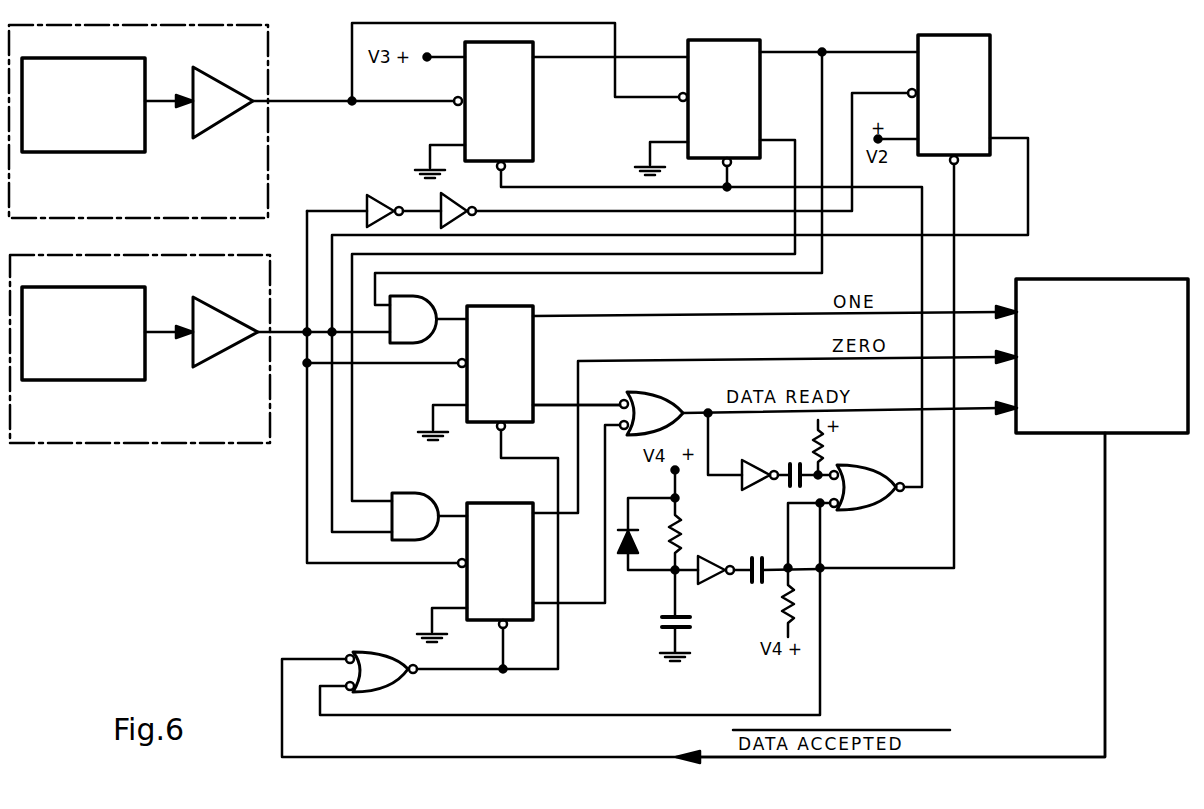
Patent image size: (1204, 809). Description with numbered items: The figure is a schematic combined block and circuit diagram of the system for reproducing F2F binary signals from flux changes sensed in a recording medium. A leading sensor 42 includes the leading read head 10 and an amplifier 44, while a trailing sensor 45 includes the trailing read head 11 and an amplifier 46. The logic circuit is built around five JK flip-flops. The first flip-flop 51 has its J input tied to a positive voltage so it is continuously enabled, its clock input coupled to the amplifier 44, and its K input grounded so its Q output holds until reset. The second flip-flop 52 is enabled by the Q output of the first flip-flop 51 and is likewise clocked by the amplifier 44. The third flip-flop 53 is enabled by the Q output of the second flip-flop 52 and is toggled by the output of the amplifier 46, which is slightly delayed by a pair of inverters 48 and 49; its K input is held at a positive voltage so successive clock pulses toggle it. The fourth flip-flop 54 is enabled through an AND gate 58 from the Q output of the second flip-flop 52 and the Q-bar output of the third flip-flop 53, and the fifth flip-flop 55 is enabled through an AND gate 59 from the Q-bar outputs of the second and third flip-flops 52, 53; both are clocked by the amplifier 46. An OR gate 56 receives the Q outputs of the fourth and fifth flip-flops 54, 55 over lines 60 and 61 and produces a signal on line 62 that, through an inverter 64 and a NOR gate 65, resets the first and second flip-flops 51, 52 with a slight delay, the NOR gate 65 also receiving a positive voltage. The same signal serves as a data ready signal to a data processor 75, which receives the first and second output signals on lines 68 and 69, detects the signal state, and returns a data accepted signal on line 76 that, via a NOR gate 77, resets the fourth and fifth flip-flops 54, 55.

The leading read head 10 is at (100, 152).
The trailing read head 11 is at (100, 380).
The leading sensor 42 is at (268, 148).
The amplifier 44 is at (210, 128).
The trailing sensor 45 is at (152, 443).
The amplifier 46 is at (218, 357).
The inverter 48 is at (378, 200).
The inverter 49 is at (457, 200).
The first flip-flop 51 is at (533, 90).
The second flip-flop 52 is at (760, 83).
The third flip-flop 53 is at (990, 80).
The fourth flip-flop 54 is at (517, 306).
The fifth flip-flop 55 is at (497, 503).
The OR gate 56 is at (652, 395).
The AND gate 58 is at (423, 296).
The AND gate 59 is at (415, 492).
The line 60 is at (617, 400).
The line 61 is at (605, 525).
The line 62 is at (700, 405).
The inverter 64 is at (747, 460).
The NOR gate 65 is at (880, 502).
The line 68 is at (625, 316).
The line 69 is at (672, 360).
The data processor 75 is at (1073, 278).
The line 76 is at (1105, 648).
The NOR gate 77 is at (372, 652).